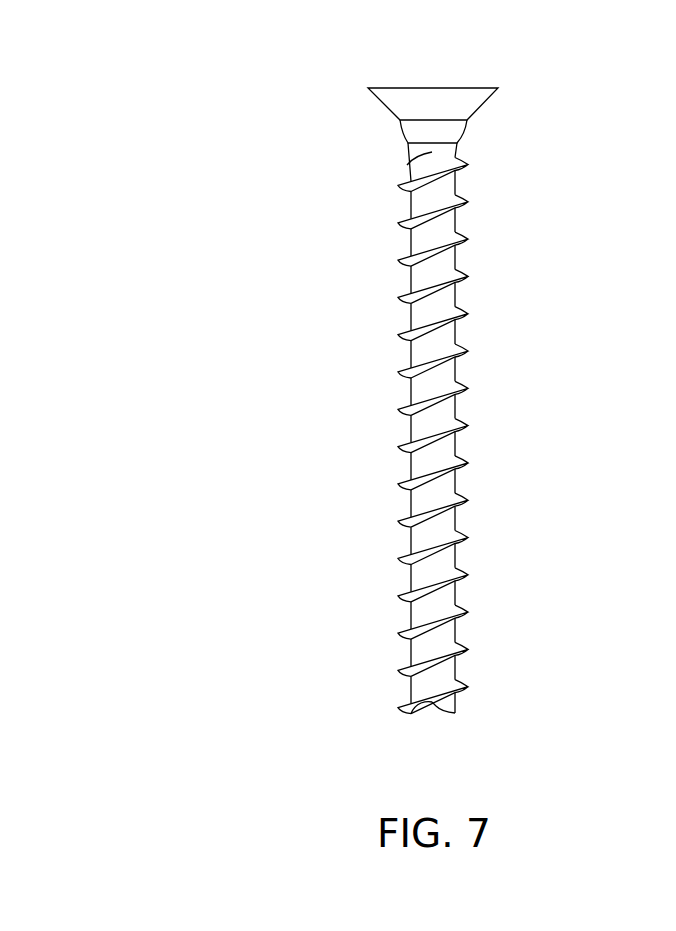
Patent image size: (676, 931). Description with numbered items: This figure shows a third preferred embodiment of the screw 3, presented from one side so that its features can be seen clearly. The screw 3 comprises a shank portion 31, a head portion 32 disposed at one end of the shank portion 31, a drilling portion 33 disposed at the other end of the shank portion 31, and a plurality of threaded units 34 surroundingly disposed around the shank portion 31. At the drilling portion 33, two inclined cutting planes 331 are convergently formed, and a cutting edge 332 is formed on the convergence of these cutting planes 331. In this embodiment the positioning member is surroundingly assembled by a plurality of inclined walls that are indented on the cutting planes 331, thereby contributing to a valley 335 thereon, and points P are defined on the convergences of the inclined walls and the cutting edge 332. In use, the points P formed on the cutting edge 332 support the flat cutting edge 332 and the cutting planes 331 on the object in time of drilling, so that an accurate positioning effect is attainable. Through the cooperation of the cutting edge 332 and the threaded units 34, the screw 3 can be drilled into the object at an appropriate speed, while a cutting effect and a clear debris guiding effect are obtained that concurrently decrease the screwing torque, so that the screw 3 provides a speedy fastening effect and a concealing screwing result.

The screw 3 is at (238, 184).
The shank portion 31 is at (465, 445).
The head portion 32 is at (498, 89).
The drilling portion 33 is at (459, 698).
The threaded units 34 is at (462, 352).
The inclined cutting planes 331 is at (418, 711).
The cutting edge 332 is at (411, 714).
The valley 335 is at (437, 711).
The points P is at (434, 705).